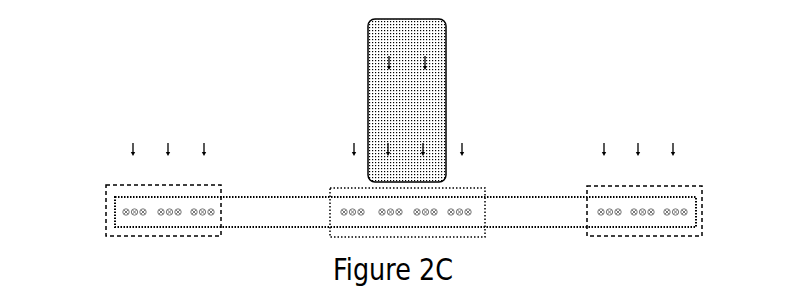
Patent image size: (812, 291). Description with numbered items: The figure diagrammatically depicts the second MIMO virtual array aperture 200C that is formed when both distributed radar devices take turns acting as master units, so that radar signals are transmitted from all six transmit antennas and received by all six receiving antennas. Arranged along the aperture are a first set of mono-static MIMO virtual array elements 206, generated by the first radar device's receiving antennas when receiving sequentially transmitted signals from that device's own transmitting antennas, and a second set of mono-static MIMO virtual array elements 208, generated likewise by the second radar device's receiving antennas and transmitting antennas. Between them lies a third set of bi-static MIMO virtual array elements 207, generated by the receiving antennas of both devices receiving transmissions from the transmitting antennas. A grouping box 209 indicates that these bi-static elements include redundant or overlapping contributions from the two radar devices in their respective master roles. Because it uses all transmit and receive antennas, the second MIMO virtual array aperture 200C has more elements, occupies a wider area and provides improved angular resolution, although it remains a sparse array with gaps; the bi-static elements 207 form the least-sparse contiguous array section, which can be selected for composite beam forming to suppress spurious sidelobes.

The second MIMO virtual array aperture 200C is at (117, 23).
The first set of mono-static MIMO virtual array elements 206 is at (106, 214).
The third set of bi-static MIMO virtual array elements 207 is at (330, 234).
The second set of mono-static MIMO virtual array elements 208 is at (702, 209).
The grouping box 209 is at (368, 44).